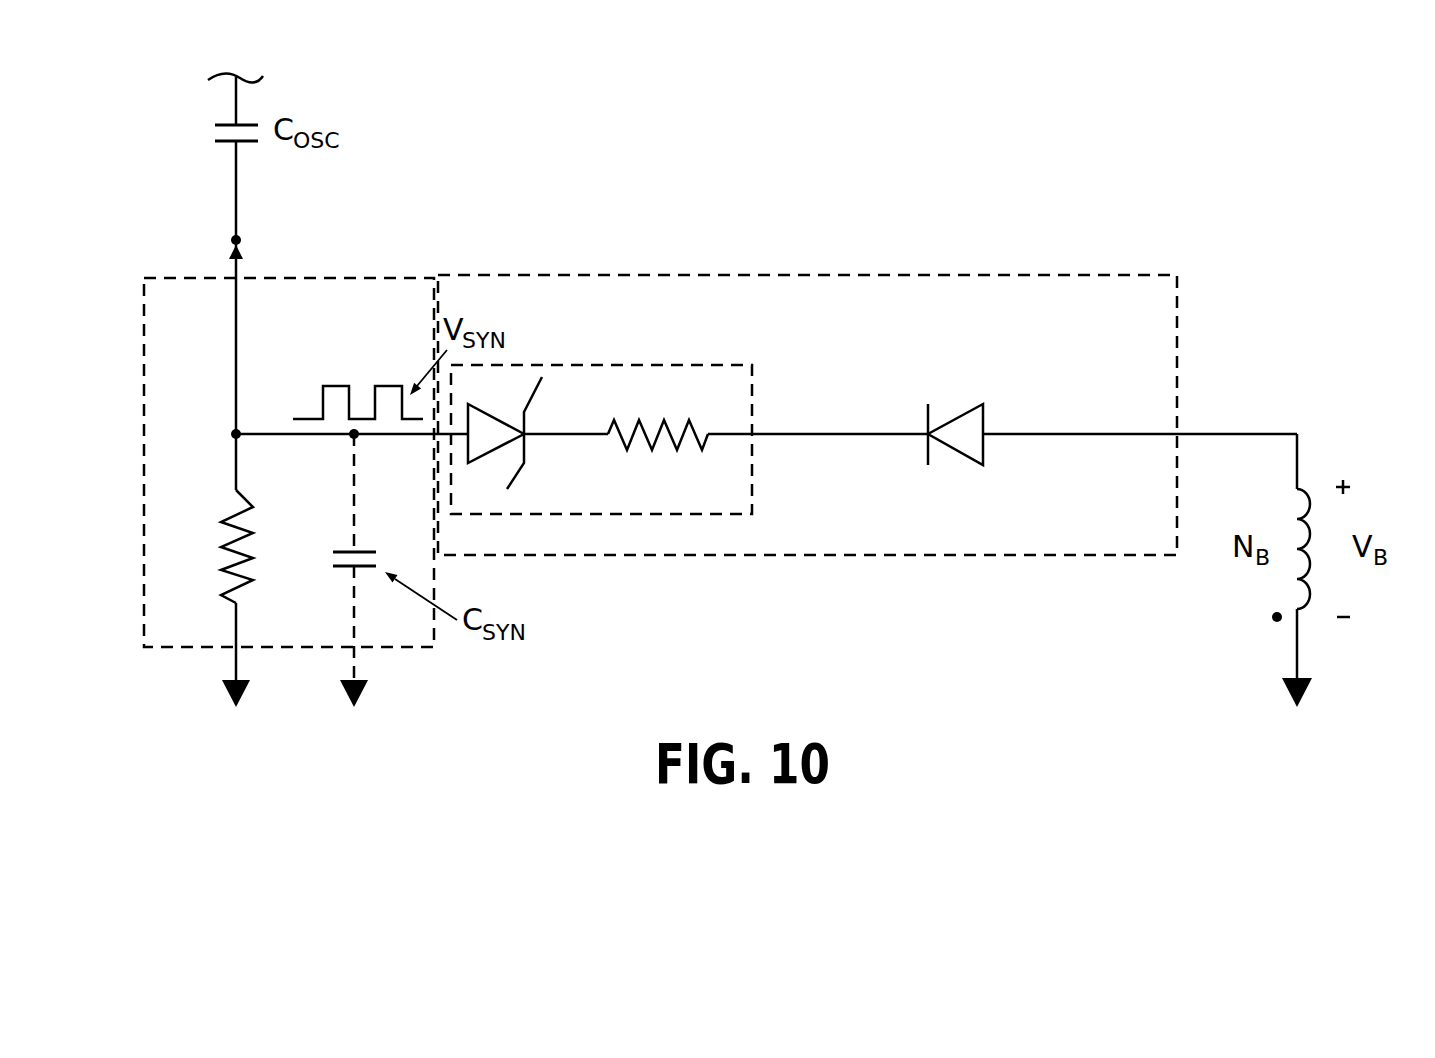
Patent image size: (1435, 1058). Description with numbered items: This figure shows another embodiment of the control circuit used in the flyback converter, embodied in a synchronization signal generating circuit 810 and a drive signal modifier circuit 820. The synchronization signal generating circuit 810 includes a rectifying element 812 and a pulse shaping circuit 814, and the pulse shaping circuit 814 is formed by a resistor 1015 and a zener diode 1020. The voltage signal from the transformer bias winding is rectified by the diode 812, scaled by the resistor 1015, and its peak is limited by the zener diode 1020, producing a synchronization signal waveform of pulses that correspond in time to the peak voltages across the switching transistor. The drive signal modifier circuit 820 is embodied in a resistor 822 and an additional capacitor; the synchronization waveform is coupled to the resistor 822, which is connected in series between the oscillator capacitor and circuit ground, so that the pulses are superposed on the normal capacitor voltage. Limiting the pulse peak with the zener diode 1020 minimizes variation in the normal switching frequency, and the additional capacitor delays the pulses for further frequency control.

The synchronization signal generating circuit 810 is at (1148, 546).
The rectifying element 812 is at (952, 418).
The pulse shaping circuit 814 is at (738, 503).
The drive signal modifier circuit 820 is at (394, 333).
The resistor 822 is at (205, 498).
The resistor 1015 is at (706, 408).
The zener diode 1020 is at (531, 412).